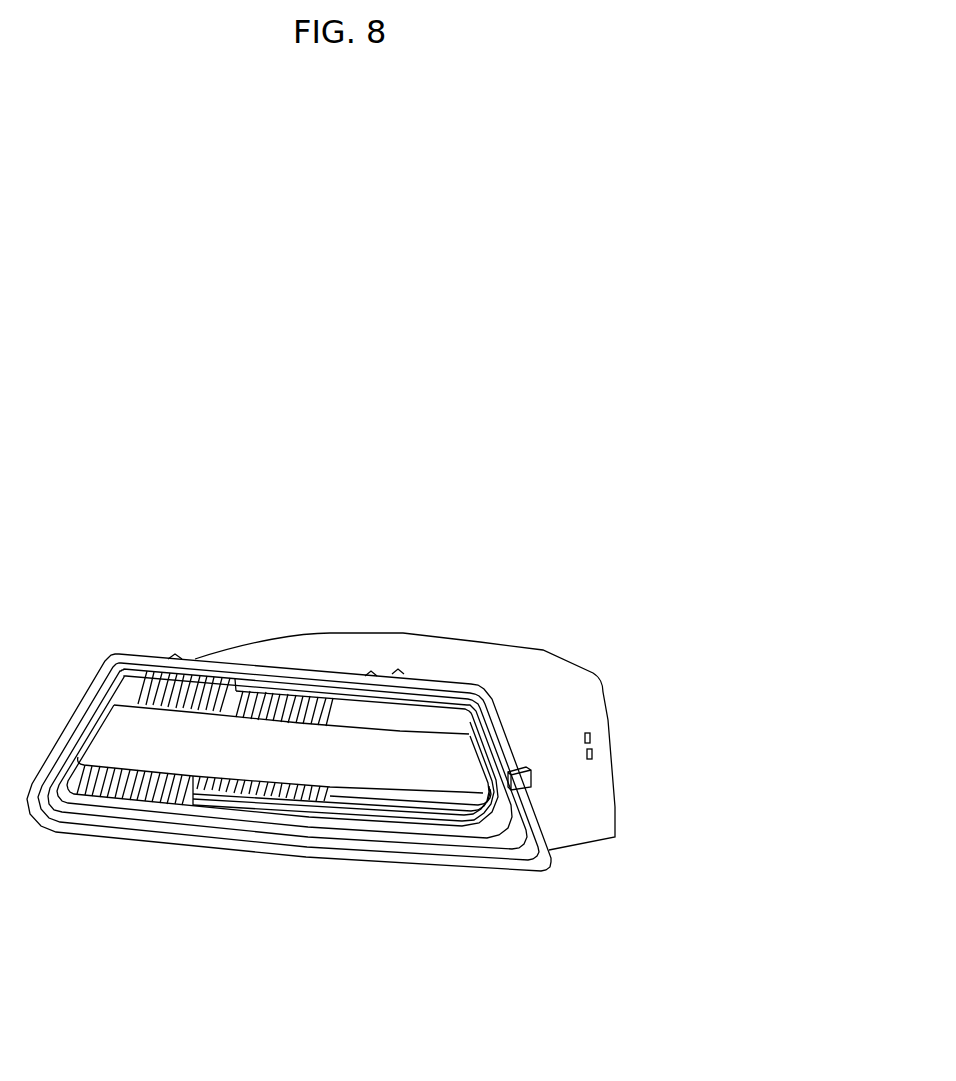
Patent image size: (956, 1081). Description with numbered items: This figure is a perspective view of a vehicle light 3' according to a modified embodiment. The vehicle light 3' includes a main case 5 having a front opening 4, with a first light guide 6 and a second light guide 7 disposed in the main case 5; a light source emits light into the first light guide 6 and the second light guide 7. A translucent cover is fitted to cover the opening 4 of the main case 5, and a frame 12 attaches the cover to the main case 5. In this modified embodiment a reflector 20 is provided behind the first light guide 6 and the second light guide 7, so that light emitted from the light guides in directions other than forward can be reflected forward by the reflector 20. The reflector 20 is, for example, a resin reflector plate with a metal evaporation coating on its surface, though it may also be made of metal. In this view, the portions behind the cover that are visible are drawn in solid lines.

The vehicle light 3' is at (351, 719).
The front opening 4 is at (557, 858).
The main case 5 is at (452, 658).
The first light guide 6 is at (312, 692).
The second light guide 7 is at (327, 765).
The frame 12 is at (205, 843).
The reflector 20 is at (190, 657).